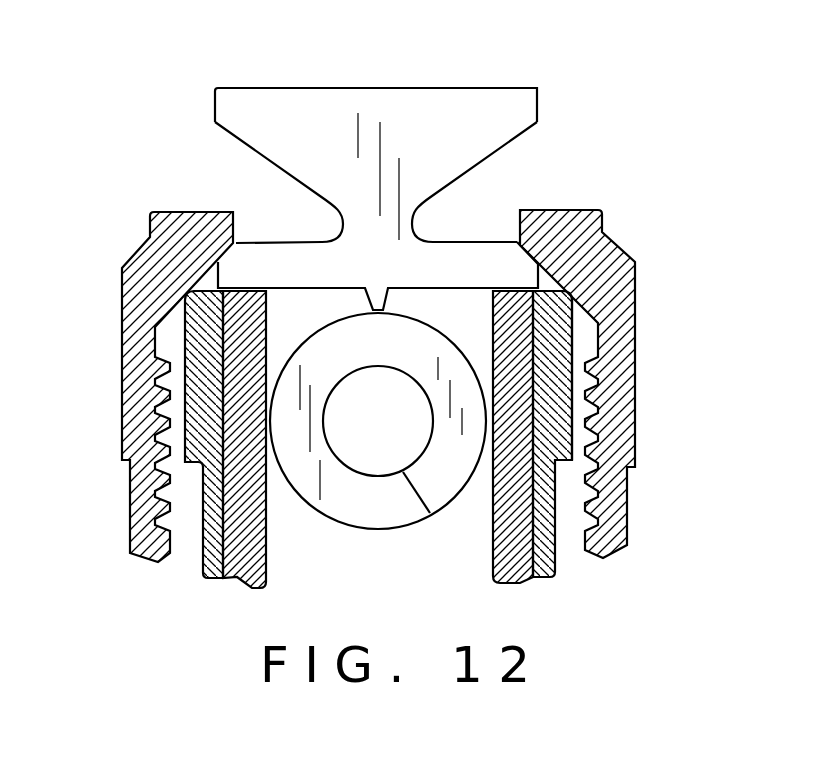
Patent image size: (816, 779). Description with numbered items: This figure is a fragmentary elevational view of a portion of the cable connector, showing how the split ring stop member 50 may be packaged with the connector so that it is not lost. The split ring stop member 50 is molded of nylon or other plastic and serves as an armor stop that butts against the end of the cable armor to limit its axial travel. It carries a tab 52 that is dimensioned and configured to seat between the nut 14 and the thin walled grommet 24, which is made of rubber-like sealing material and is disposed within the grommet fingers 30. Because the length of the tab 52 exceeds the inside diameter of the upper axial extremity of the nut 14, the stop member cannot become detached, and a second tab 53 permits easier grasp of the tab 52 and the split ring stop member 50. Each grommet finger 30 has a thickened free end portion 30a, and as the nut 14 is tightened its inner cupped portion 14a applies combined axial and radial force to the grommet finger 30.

The nut 14 is at (122, 452).
The cupped portion 14a is at (583, 325).
The thin walled grommet 24 is at (493, 548).
The grommet fingers 30 is at (555, 521).
The free end portion 30a is at (577, 410).
The split ring stop member 50 is at (358, 503).
The tab 52 is at (308, 242).
The second tab 53 is at (393, 100).